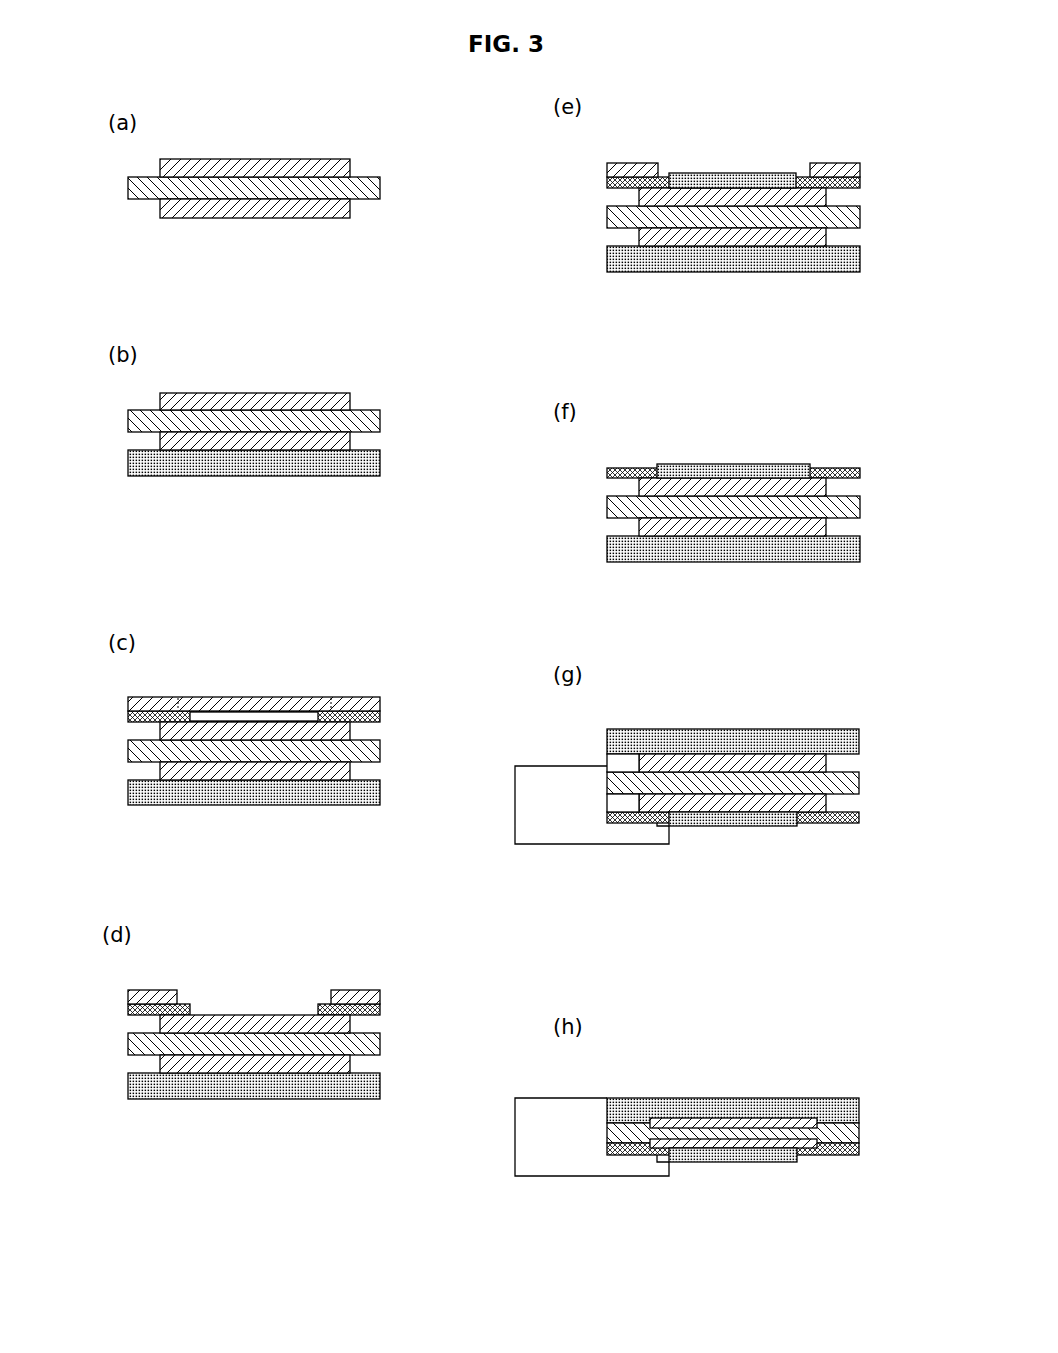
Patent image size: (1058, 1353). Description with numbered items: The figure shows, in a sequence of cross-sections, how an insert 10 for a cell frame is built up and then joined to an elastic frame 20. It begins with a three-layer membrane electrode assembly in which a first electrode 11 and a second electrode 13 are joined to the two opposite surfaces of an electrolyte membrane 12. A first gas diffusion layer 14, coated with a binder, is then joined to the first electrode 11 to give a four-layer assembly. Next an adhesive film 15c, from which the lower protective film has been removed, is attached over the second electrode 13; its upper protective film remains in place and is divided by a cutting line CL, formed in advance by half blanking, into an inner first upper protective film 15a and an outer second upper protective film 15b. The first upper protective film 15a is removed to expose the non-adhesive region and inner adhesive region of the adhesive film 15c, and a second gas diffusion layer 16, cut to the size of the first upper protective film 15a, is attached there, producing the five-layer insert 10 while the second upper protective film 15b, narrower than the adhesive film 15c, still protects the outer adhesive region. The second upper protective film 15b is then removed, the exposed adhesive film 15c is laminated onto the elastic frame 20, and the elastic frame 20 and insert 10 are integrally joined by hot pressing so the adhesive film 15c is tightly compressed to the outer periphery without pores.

The insert for a cell frame 10 is at (806, 435).
The first electrode 11 is at (357, 209).
The electrolyte membrane 12 is at (121, 188).
The second electrode 13 is at (357, 167).
The first gas diffusion layer 14 is at (121, 465).
The first upper protective film 15a is at (255, 695).
The second upper protective film 15b is at (366, 695).
The adhesive film 15c is at (384, 714).
The second gas diffusion layer 16 is at (783, 170).
The elastic frame 20 is at (565, 846).
The cutting line CL is at (178, 695).